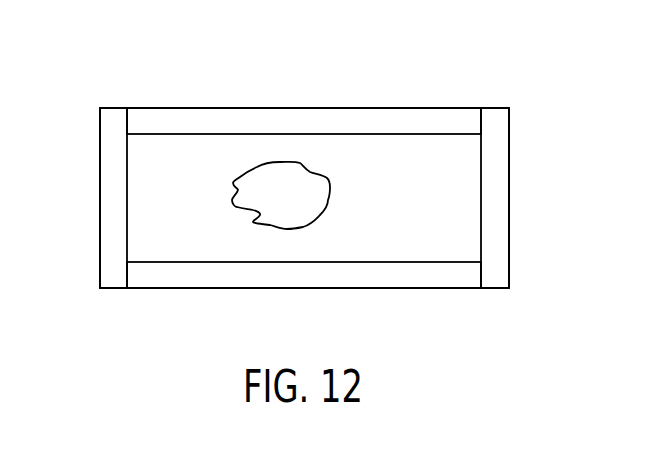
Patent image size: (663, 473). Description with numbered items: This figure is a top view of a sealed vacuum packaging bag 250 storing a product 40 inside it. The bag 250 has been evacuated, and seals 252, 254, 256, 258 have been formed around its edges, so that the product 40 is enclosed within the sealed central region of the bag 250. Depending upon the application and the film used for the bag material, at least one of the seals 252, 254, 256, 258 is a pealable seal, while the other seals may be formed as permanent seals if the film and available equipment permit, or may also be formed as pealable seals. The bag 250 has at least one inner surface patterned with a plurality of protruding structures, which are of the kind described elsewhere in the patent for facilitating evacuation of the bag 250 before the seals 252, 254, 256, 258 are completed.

The vacuum packaging bag 250 is at (133, 73).
The seal 252 is at (315, 117).
The seal 254 is at (496, 201).
The seal 256 is at (295, 278).
The seal 258 is at (107, 198).
The product 40 is at (332, 192).